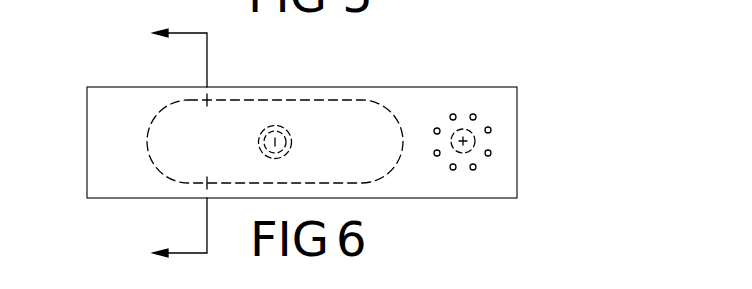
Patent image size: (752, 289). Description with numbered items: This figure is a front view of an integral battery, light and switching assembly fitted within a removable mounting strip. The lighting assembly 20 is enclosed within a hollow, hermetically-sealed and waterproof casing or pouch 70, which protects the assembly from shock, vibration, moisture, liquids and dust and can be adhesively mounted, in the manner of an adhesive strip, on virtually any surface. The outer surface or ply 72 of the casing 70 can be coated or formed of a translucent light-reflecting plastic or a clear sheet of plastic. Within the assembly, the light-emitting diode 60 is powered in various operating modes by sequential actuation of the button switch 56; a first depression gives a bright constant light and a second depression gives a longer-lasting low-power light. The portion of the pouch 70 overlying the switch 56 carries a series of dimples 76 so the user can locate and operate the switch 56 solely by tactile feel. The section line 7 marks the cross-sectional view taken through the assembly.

The section line 7- 7 is at (164, 143).
The casing 70 is at (397, 75).
The lighting assembly 20 is at (348, 156).
The light-emitting diode 60 is at (276, 125).
The button switch 56 is at (477, 140).
The outer surface 72 is at (463, 110).
The dimples 76 is at (491, 158).